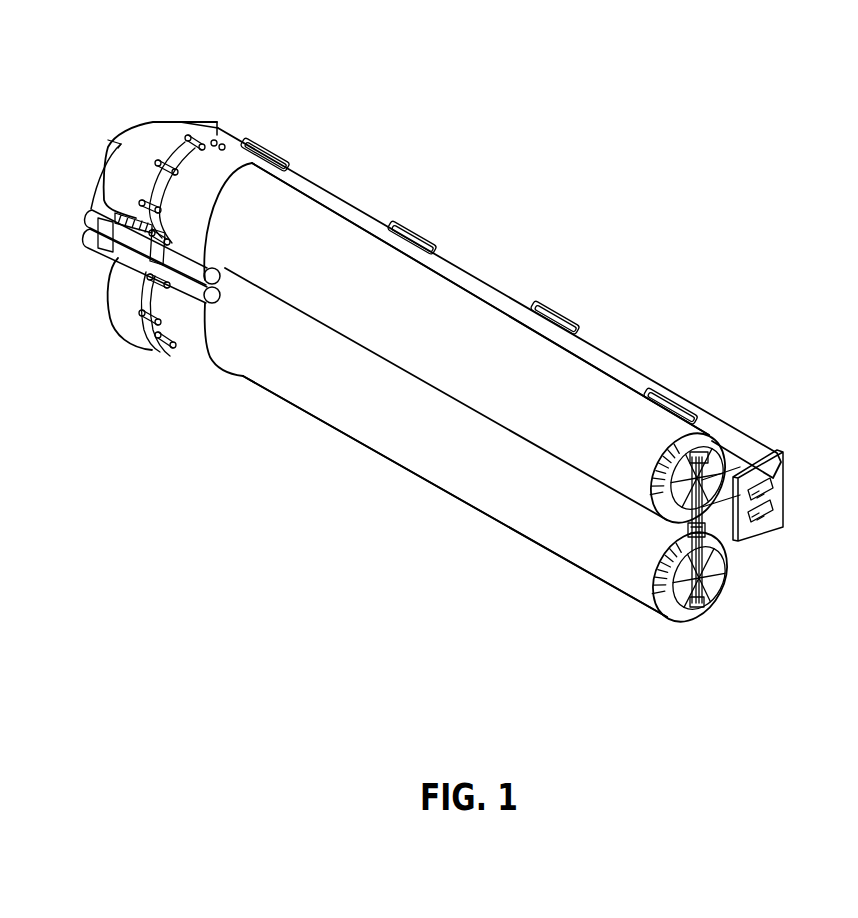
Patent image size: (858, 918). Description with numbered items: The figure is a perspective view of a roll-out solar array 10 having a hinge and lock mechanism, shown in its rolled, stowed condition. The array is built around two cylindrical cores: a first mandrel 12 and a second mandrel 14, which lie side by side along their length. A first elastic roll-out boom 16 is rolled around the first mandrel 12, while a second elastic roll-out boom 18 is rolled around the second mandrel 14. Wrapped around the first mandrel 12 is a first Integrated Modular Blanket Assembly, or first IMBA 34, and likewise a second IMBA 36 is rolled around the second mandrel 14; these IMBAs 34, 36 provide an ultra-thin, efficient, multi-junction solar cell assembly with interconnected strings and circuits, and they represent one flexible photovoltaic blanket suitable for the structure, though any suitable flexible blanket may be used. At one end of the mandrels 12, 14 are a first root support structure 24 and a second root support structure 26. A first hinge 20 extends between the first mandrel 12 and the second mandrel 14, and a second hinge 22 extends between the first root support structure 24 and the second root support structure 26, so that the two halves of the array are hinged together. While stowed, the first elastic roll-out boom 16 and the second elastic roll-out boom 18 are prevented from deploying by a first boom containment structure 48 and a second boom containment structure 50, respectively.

The roll-out solar array 10 is at (683, 216).
The first mandrel 12 is at (710, 468).
The second mandrel 14 is at (678, 608).
The first elastic roll-out boom 16 is at (220, 170).
The second elastic roll-out boom 18 is at (185, 316).
The first hinge 20 is at (687, 523).
The second hinge 22 is at (703, 606).
The first root support structure 24 is at (613, 365).
The second root support structure 26 is at (762, 522).
The first Integrated Modular Blanket Assembly (IMBA) 34 is at (405, 290).
The second Integrated Modular Blanket Assembly (IMBA) 36 is at (320, 393).
The first boom containment structure 48 is at (183, 150).
The second boom containment structure 50 is at (150, 292).